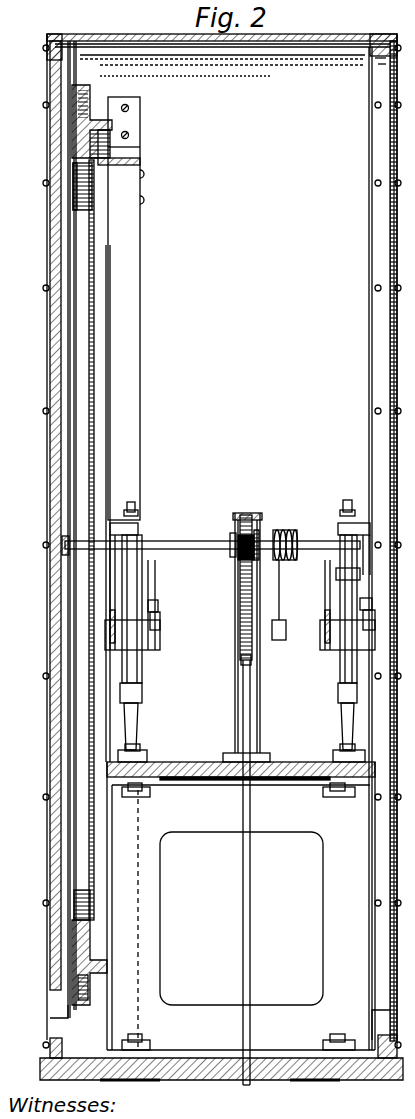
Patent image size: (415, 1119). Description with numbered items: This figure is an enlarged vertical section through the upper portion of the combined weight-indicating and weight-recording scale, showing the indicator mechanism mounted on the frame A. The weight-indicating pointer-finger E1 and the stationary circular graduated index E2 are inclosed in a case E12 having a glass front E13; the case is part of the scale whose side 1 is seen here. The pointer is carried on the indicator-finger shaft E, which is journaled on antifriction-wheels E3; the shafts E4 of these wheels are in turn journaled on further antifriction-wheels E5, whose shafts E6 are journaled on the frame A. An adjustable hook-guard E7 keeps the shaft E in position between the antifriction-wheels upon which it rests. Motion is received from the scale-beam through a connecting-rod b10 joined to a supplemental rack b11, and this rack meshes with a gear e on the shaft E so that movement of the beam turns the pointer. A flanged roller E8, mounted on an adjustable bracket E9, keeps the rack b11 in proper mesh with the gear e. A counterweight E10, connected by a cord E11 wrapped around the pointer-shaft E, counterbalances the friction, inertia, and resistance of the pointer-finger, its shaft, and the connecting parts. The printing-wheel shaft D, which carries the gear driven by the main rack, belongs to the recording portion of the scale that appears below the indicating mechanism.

The case E12 is at (222, 41).
The casing side 1 is at (393, 352).
The glass front E13 is at (50, 323).
The adjustable hook-guard E7 is at (68, 624).
The shafts of the antifriction-wheels E4 is at (92, 344).
The stationary circular graduated index E2 is at (73, 150).
The pointer-finger E1 is at (72, 176).
The indicator-finger shaft E is at (207, 540).
The gear e is at (250, 520).
The adjustable bracket E9 is at (244, 515).
The flanged roller E8 is at (258, 522).
The supplemental rack b11 is at (262, 527).
The connecting-rod b10 is at (250, 918).
The cord E11 is at (282, 583).
The counterweight E10 is at (280, 641).
The antifriction-wheels E3 is at (128, 575).
The antifriction-wheels E5 is at (158, 608).
The shafts of the second antifriction-wheels E6 is at (157, 640).
The frame A is at (143, 695).
The printing-wheel shaft D is at (410, 803).